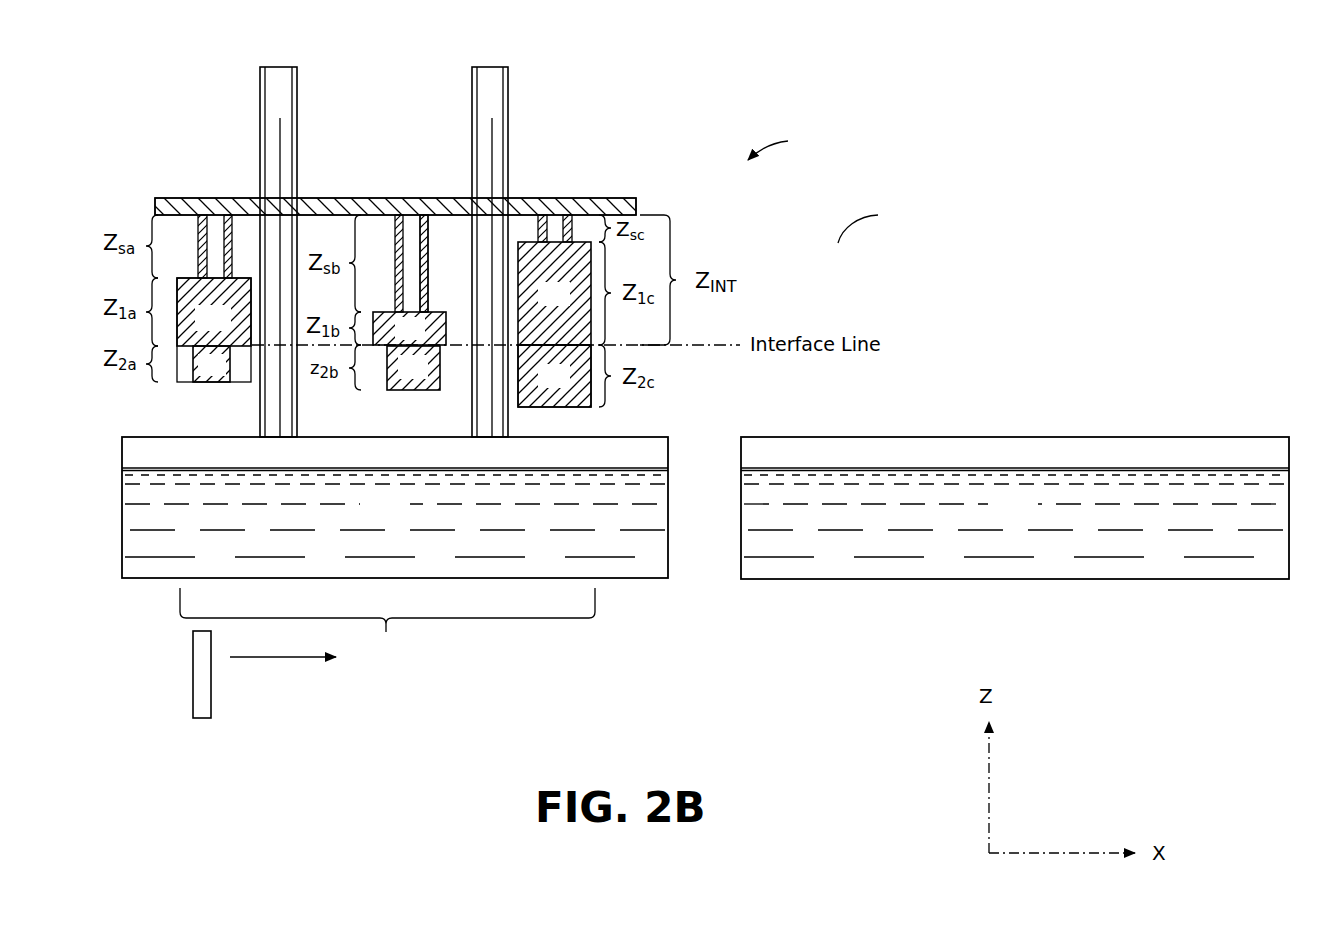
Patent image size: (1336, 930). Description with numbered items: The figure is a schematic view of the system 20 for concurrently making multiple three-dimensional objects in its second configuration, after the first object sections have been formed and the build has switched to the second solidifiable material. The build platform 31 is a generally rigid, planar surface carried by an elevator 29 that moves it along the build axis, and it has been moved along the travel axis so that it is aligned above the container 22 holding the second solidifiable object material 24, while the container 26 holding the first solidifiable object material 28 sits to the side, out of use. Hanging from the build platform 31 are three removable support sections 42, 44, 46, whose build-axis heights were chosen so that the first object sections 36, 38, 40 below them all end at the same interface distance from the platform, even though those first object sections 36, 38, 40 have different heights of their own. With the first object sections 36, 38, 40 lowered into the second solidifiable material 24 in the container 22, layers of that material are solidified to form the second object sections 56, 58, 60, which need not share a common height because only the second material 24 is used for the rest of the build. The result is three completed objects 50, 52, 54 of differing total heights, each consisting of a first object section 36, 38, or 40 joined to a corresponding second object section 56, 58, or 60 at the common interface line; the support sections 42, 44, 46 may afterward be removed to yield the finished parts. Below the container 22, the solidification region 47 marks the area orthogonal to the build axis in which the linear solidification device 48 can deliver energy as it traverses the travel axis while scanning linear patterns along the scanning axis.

The system 20 is at (781, 144).
The container 22 is at (153, 580).
The second solidifiable object material 24 is at (398, 518).
The container 26 is at (1290, 505).
The first solidifiable object material 28 is at (1025, 518).
The elevator 29 is at (472, 118).
The build platform 31 is at (228, 198).
The first object section 36 is at (225, 326).
The first object section 38 is at (421, 339).
The first object section 40 is at (565, 304).
The removable support section 42 is at (199, 247).
The removable support section 44 is at (398, 247).
The removable support section 46 is at (560, 198).
The solidification region 47 is at (387, 624).
The linear solidification device 48 is at (193, 690).
The completed object 50 is at (177, 325).
The completed object 52 is at (428, 278).
The completed object 54 is at (555, 407).
The second object section 56 is at (224, 373).
The second object section 58 is at (424, 377).
The second object section 60 is at (565, 386).